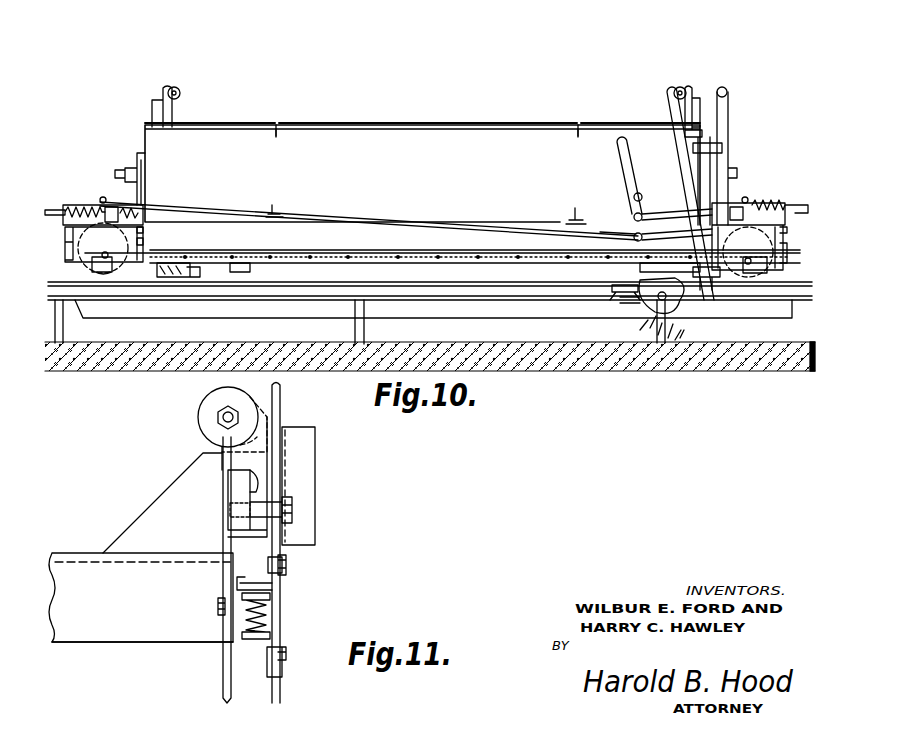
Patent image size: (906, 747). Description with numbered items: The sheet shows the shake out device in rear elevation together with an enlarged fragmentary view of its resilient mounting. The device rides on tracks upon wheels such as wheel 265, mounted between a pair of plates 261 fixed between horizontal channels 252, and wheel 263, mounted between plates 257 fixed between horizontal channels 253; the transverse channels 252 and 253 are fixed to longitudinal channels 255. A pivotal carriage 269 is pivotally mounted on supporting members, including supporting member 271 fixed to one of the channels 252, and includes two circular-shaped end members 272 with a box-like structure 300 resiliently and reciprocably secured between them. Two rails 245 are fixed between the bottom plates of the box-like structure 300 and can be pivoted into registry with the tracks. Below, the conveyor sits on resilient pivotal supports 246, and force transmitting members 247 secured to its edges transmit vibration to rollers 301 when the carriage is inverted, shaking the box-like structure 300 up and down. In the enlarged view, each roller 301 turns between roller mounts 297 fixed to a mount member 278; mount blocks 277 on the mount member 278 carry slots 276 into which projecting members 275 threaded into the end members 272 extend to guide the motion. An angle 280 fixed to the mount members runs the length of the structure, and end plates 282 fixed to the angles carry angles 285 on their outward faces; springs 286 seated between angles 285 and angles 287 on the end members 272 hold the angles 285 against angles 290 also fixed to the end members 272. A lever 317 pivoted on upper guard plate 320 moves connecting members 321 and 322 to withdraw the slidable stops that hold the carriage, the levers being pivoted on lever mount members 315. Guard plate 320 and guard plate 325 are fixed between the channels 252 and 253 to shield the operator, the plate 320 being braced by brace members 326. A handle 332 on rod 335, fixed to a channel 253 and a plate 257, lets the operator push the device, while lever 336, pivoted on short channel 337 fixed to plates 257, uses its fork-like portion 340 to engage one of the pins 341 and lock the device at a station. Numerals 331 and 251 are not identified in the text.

In FIG. 10, the box-like structure 300 is at (389, 120).
In FIG. 11, the box-like structure 300 is at (126, 490).
In FIG. 10, the guard plate 320 is at (238, 125).
In FIG. 10, the pivotal carriage 269 is at (462, 121).
In FIG. 11, the pivotal carriage 269 is at (405, 529).
In FIG. 10, the slot 331 is at (276, 133).
In FIG. 10, the circular-shaped end member 272 is at (166, 88).
In FIG. 11, the circular-shaped end member 272 is at (280, 393).
In FIG. 10, the roller 301 is at (179, 90).
In FIG. 11, the roller 301 is at (215, 398).
In FIG. 10, the brace member 326 is at (137, 160).
In FIG. 10, the supporting member 271 is at (144, 183).
In FIG. 10, the connecting member 321 is at (330, 215).
In FIG. 10, the rail 245 is at (272, 206).
In FIG. 10, the lever mount member 315 is at (130, 207).
In FIG. 10, the horizontal channel 252 is at (70, 236).
In FIG. 10, the longitudinal channel 255 is at (68, 258).
In FIG. 10, the plate 261 is at (80, 262).
In FIG. 10, the wheel 265 is at (118, 262).
In FIG. 10, the guard plate 325 is at (412, 250).
In FIG. 10, the force transmitting member 247 is at (190, 270).
In FIG. 10, the leg 251 is at (64, 328).
In FIG. 10, the resilient pivotal support 246 is at (683, 333).
In FIG. 10, the lever 317 is at (634, 174).
In FIG. 10, the connecting member 322 is at (673, 217).
In FIG. 10, the horizontal channel 253 is at (712, 232).
In FIG. 10, the lever 336 is at (680, 138).
In FIG. 10, the handle 332 is at (727, 90).
In FIG. 10, the rod 335 is at (729, 120).
In FIG. 10, the plate 257 is at (770, 262).
In FIG. 10, the wheel 263 is at (745, 286).
In FIG. 10, the short channel 337 is at (712, 290).
In FIG. 10, the fork-like portion 340 is at (670, 300).
In FIG. 10, the pin 341 is at (620, 290).
In FIG. 11, the angle 280 is at (170, 632).
In FIG. 11, the end plate 282 is at (231, 668).
In FIG. 11, the roller mount 297 is at (215, 418).
In FIG. 11, the mount member 278 is at (228, 502).
In FIG. 11, the mount block 277 is at (250, 488).
In FIG. 11, the slot 276 is at (285, 488).
In FIG. 11, the projecting member 275 is at (290, 500).
In FIG. 11, the angle 285 is at (240, 582).
In FIG. 11, the angle 290 is at (286, 565).
In FIG. 11, the spring 286 is at (272, 622).
In FIG. 11, the angle 287 is at (283, 672).